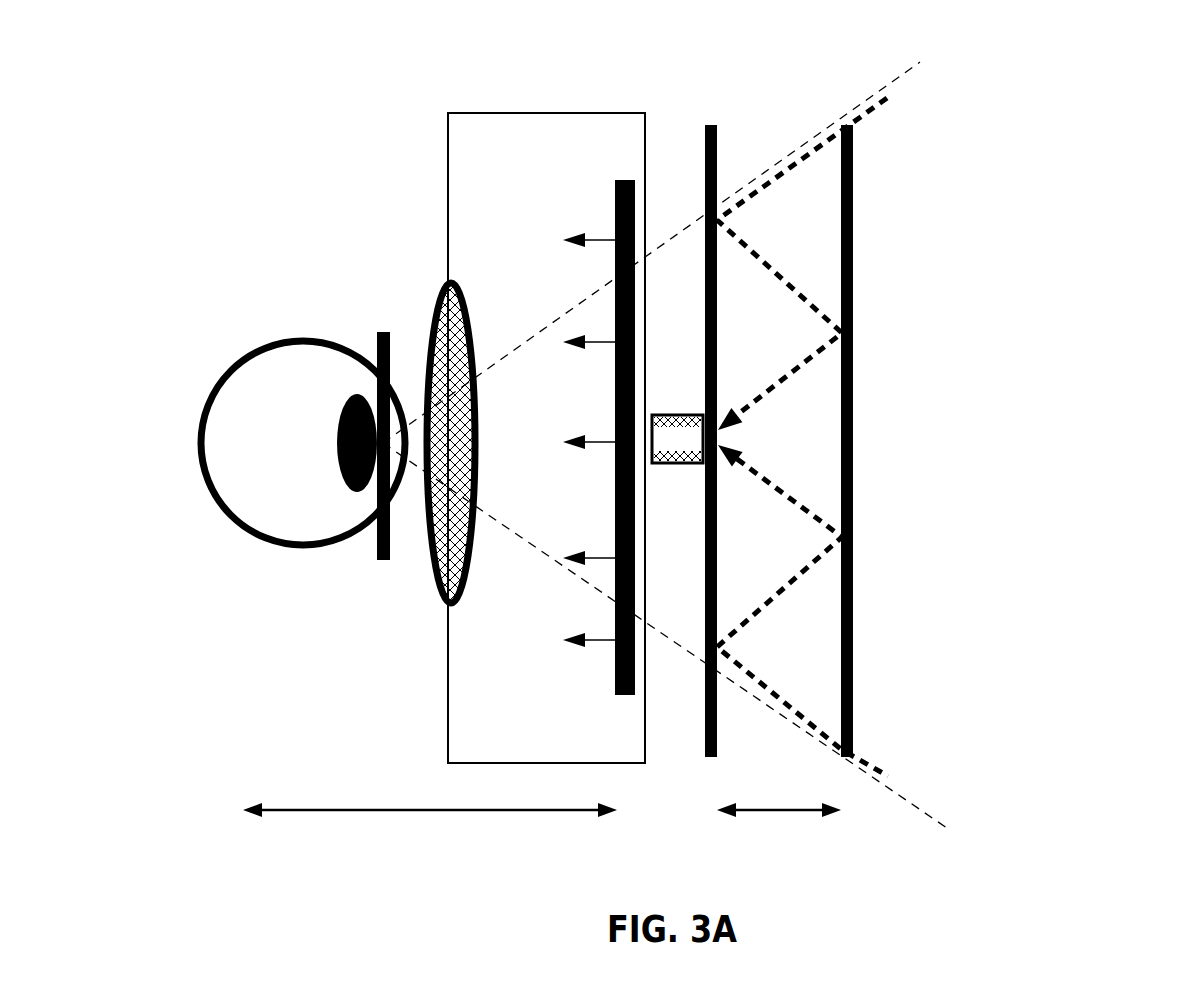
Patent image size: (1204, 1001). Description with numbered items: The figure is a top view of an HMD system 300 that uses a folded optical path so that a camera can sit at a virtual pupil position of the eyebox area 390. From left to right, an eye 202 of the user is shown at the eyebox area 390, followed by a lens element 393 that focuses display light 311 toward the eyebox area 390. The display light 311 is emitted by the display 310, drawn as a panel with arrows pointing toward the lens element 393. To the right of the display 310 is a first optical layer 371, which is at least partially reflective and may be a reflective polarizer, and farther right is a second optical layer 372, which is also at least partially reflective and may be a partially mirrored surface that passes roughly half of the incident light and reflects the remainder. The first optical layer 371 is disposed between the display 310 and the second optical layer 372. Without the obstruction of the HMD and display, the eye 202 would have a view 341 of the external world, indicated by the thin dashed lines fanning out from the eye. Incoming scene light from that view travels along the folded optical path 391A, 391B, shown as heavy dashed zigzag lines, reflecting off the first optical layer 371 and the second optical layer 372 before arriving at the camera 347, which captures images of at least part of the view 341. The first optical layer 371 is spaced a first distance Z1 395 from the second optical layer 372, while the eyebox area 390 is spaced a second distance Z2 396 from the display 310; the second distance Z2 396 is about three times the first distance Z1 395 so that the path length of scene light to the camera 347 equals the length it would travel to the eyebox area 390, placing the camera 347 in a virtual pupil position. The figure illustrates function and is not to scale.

The HMD system 300 is at (1177, 45).
The eye 202 is at (273, 328).
The eyebox area 390 is at (382, 333).
The lens element 393 is at (450, 285).
The display 310 is at (615, 668).
The display light 311 is at (589, 440).
The view 341 is at (692, 224).
The first optical layer 371 is at (711, 125).
The second optical layer 372 is at (847, 125).
The camera 347 is at (662, 450).
The folded optical path 391A is at (887, 99).
The folded optical path 391B is at (795, 499).
The second distance Z2 396 is at (484, 843).
The first distance Z1 395 is at (800, 844).